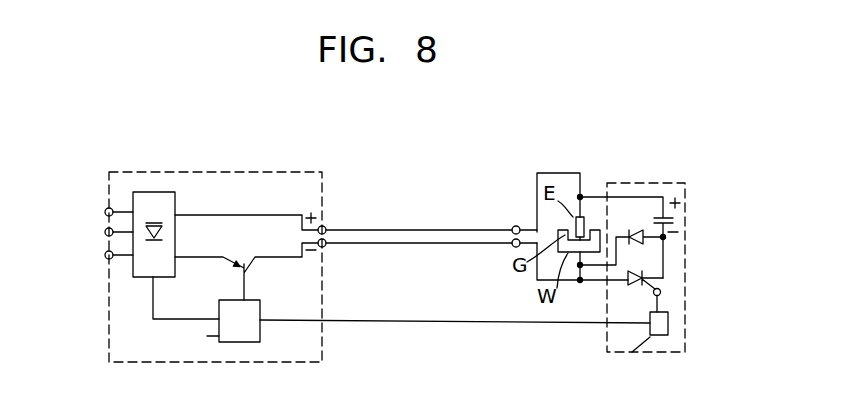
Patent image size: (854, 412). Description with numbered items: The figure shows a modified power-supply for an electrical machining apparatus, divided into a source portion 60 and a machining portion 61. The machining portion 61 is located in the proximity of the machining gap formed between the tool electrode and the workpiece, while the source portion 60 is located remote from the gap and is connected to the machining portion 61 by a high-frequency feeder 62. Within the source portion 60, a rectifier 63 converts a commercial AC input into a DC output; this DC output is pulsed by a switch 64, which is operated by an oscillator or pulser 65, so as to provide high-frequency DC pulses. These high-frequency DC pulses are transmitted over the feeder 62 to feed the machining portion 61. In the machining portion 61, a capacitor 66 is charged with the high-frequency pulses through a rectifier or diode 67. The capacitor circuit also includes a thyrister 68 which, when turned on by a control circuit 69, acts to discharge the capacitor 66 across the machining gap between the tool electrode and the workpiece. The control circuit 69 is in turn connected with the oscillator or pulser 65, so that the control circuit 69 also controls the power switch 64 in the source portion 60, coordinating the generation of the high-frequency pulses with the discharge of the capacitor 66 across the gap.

The source portion 60 is at (255, 170).
The machining portion 61 is at (665, 183).
The high-frequency feeder 62 is at (435, 228).
The rectifier 63 is at (154, 192).
The switch 64 is at (238, 262).
The oscillator or pulser 65 is at (260, 330).
The capacitor 66 is at (678, 222).
The rectifier or diode 67 is at (637, 229).
The thyrister 68 is at (648, 272).
The control circuit 69 is at (668, 325).